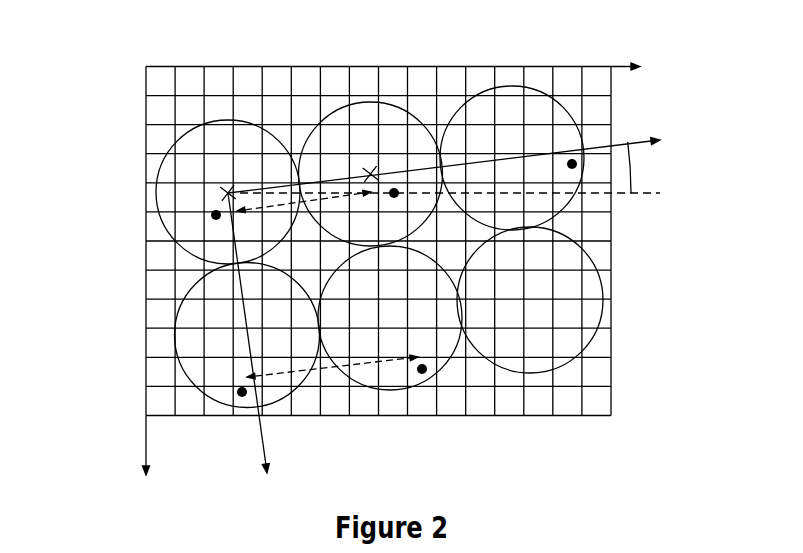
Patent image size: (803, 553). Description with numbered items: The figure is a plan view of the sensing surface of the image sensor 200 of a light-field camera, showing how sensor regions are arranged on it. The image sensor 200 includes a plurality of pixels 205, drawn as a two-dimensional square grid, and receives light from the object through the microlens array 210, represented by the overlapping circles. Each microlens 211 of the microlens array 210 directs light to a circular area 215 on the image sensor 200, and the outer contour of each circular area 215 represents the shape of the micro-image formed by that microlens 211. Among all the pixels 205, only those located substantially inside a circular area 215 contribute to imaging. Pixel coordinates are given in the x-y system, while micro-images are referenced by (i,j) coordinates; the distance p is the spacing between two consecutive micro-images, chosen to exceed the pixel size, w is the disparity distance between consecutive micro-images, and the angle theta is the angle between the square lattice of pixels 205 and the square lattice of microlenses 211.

The image sensor 200 is at (405, 48).
The pixels 205 is at (155, 83).
The microlens array 210 is at (634, 289).
The microlens 211 is at (160, 227).
The circular area 215 is at (174, 187).